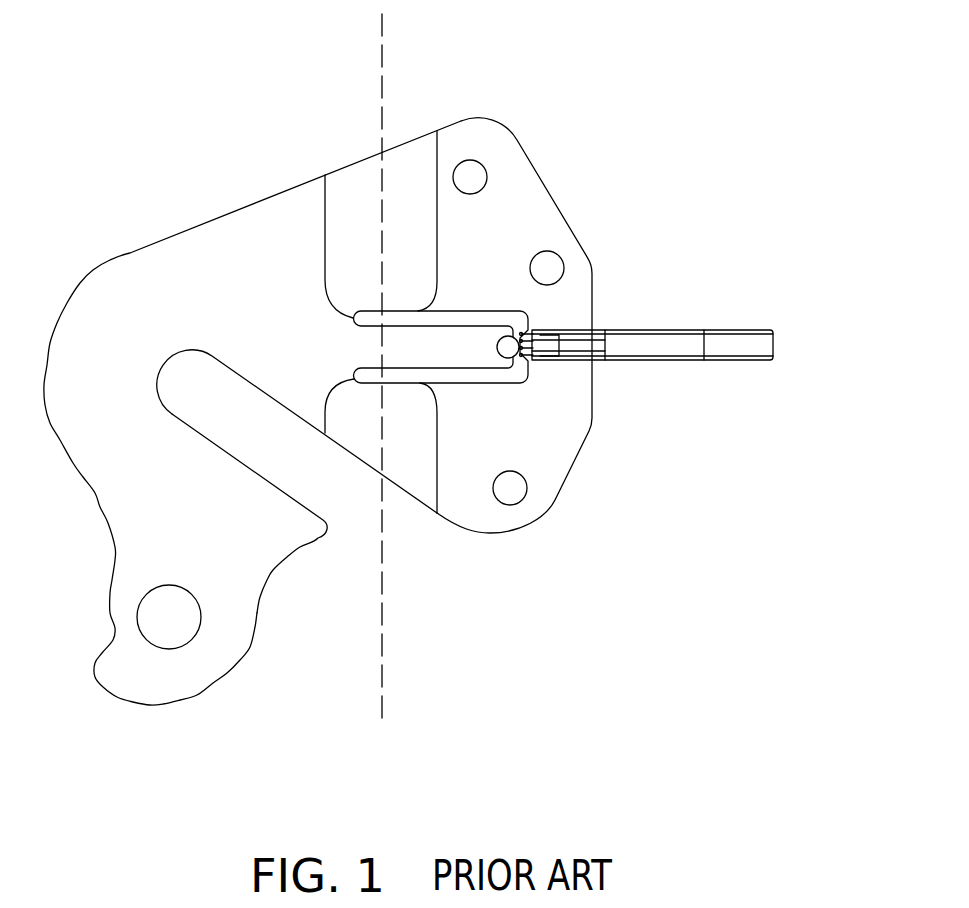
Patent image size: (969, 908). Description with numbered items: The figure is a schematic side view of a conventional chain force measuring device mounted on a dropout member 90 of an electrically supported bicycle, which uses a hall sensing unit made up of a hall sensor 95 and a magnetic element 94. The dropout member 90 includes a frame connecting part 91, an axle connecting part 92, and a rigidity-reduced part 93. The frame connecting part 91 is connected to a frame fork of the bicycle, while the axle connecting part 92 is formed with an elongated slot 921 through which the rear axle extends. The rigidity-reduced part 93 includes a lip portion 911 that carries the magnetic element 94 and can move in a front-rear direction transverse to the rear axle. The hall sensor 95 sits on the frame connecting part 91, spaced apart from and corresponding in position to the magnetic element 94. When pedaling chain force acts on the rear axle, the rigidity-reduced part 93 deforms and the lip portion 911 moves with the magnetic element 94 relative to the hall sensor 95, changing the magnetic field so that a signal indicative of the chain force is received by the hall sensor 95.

The dropout member 90 is at (567, 121).
The frame connecting part 91 is at (553, 197).
The lip portion 911 is at (427, 347).
The axle connecting part 92 is at (207, 223).
The elongated slot 921 is at (338, 497).
The rigidity-reduced part 93 is at (442, 587).
The magnetic element 94 is at (500, 354).
The hall sensor 95 is at (540, 320).